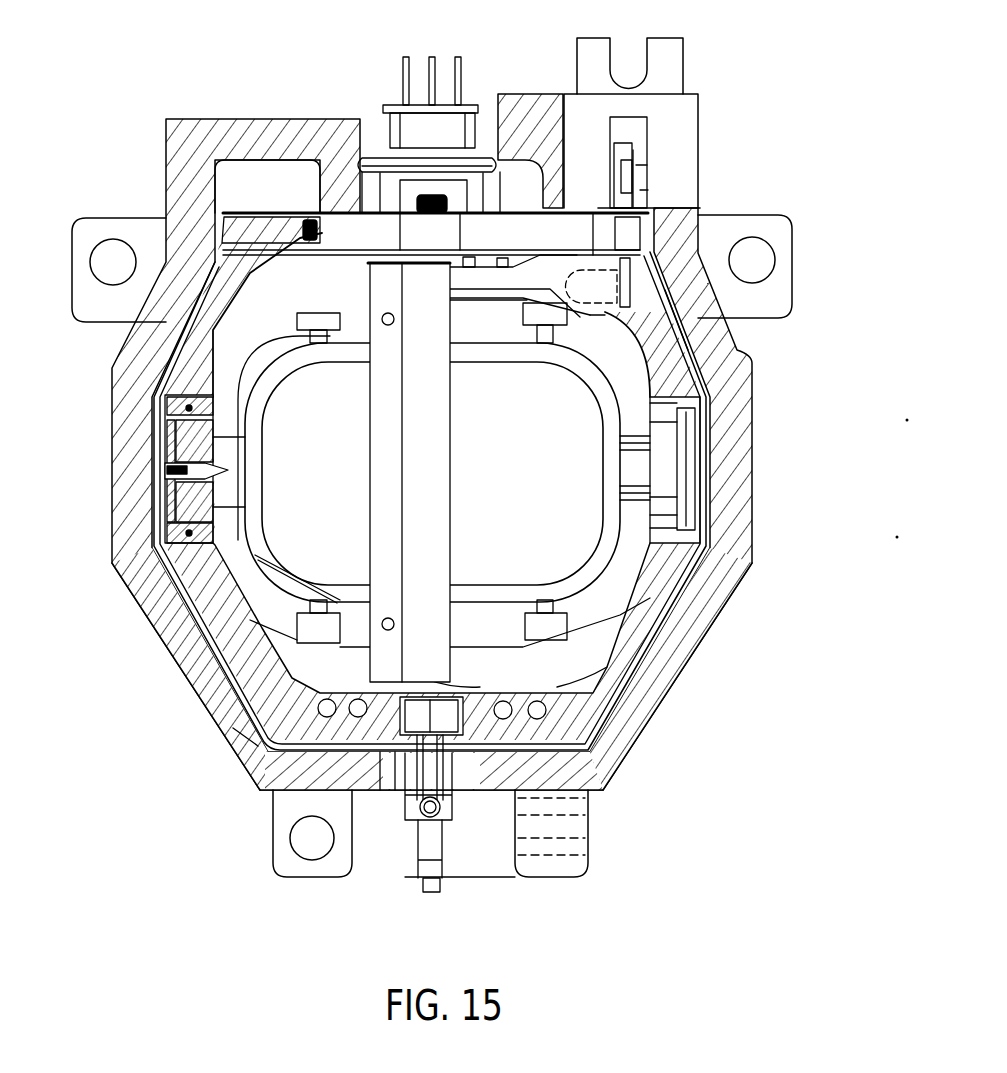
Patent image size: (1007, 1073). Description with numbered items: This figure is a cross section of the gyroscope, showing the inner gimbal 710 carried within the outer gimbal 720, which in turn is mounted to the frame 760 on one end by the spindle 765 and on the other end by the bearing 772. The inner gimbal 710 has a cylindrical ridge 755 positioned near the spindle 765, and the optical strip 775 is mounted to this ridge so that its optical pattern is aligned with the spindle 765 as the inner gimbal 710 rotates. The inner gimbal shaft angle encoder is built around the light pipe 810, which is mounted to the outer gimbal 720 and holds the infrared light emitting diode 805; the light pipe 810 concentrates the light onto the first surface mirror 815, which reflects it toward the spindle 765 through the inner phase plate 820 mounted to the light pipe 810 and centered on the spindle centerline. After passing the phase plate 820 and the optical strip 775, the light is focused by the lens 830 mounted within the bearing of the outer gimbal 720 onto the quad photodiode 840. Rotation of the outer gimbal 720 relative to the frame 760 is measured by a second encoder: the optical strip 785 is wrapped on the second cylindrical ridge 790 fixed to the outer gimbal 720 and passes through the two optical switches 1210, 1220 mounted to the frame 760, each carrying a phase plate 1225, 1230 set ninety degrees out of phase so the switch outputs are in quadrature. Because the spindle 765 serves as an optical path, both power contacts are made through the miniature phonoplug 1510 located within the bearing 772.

The inner gimbal 710 is at (607, 590).
The outer gimbal 720 is at (212, 338).
The cylindrical ridge 755 is at (233, 737).
The frame 760 is at (750, 401).
The spindle 765 is at (393, 237).
The bearing 772 is at (393, 767).
The optical strip 775 is at (330, 247).
The optical strip 785 is at (622, 185).
The second cylindrical ridge 790 is at (630, 233).
The infrared light emitting diode 805 is at (722, 340).
The light pipe 810 is at (648, 208).
The first surface mirror 815 is at (440, 295).
The inner phase plate 820 is at (477, 248).
The lens 830 is at (392, 158).
The quad photodiode 840 is at (452, 128).
The optical switch 1210 is at (697, 111).
The optical switch 1220 is at (673, 107).
The phase plate 1225 is at (746, 178).
The phase plate 1230 is at (632, 195).
The miniature phonoplug 1510 is at (430, 840).